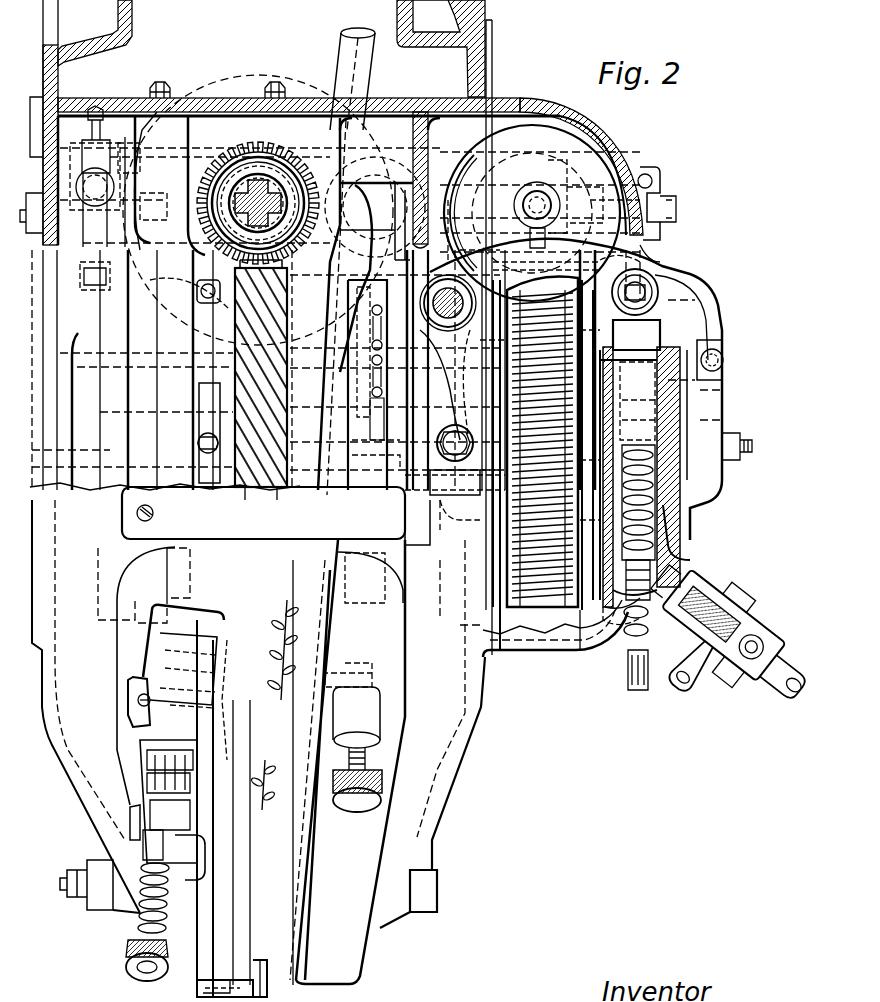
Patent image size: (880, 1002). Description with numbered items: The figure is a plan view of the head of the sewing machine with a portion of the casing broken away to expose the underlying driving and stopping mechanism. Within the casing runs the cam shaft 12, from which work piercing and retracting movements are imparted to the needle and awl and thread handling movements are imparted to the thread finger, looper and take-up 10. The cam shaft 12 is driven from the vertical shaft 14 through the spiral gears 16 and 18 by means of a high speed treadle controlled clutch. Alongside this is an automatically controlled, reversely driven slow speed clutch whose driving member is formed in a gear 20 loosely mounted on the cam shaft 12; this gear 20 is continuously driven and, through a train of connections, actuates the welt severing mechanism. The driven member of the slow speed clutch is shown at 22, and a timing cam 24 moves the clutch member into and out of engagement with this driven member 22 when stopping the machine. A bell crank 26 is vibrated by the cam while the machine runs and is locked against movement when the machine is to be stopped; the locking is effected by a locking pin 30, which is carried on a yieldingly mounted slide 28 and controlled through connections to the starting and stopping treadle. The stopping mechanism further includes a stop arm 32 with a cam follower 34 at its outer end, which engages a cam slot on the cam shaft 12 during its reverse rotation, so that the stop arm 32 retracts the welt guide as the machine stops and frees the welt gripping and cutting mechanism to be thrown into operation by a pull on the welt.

The take-up 10 is at (196, 972).
The cam shaft 12 is at (386, 498).
The vertical shaft 14 is at (278, 172).
The spiral gear 16 is at (250, 152).
The spiral gear 18 is at (233, 305).
The gear 20 is at (546, 610).
The driven member of the slow speed clutch 22 is at (499, 656).
The timing cam 24 is at (447, 518).
The bell crank 26 is at (652, 250).
The yieldingly mounted slide 28 is at (658, 332).
The locking pin 30 is at (660, 275).
The stop arm 32 is at (272, 380).
The cam follower 34 is at (372, 400).